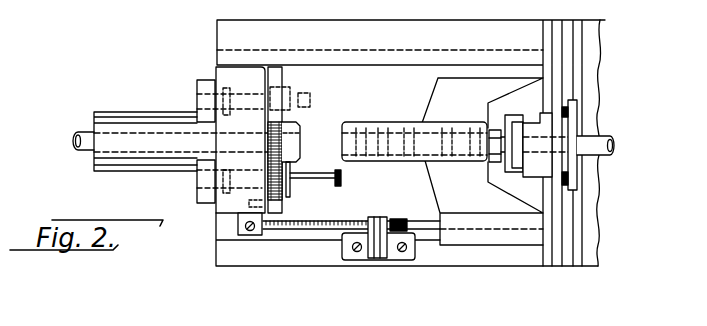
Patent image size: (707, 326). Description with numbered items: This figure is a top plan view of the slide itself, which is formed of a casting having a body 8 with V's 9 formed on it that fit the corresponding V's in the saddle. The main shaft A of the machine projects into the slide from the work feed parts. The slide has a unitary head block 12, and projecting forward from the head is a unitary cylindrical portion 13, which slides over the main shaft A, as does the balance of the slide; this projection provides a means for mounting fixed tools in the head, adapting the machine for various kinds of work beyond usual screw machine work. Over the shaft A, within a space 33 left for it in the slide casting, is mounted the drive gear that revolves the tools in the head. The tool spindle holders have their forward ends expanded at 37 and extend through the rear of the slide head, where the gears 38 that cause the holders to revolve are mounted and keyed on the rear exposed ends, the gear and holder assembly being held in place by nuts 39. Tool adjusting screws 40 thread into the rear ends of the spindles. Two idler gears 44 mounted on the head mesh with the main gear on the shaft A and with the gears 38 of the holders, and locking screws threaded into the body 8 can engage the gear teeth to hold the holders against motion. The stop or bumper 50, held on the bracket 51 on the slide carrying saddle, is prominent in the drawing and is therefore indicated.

The body 8 is at (408, 95).
The V's 9 is at (492, 263).
The head block 12 is at (232, 200).
The cylindrical portion 13 is at (125, 113).
The space 33 is at (296, 122).
The expanded forward ends 37 is at (203, 85).
The gears 38 is at (278, 202).
The nuts 39 is at (287, 197).
The tool adjusting screws 40 is at (311, 181).
The idler gears 44 is at (289, 149).
The stop or bumper 50 is at (250, 232).
The bracket 51 is at (364, 252).
The main shaft A is at (600, 150).